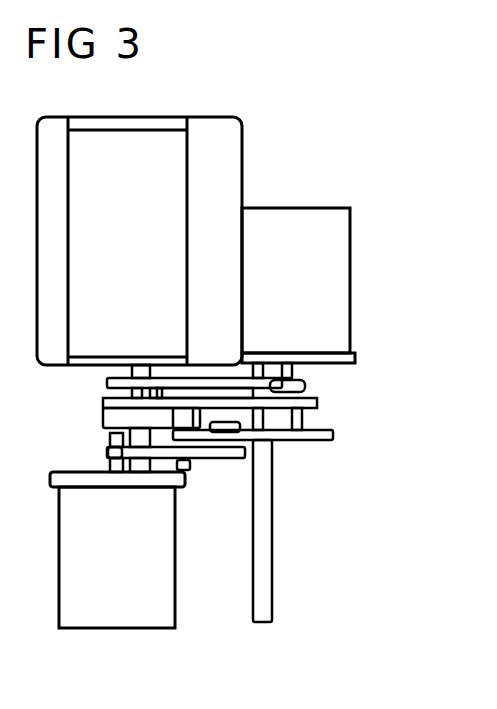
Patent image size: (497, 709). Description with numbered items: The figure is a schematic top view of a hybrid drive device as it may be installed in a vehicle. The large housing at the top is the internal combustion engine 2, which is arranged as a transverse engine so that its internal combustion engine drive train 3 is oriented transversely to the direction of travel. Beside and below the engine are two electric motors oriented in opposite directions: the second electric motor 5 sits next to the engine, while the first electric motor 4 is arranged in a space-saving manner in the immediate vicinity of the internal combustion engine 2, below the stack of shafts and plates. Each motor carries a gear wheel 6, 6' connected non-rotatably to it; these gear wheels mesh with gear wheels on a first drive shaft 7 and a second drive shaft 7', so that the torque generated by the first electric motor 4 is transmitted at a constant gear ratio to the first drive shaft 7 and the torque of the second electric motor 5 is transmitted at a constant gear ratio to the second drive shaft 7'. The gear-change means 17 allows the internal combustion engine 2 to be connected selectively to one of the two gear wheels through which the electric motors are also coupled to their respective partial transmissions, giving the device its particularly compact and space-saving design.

The internal combustion engine 2 is at (233, 130).
The second electric motor 5 is at (305, 218).
The internal combustion engine drive train 3 is at (137, 400).
The gear-change means 17 is at (103, 415).
The gear wheel 6 is at (151, 456).
The gear wheel 6' is at (318, 396).
The first drive shaft 7 is at (241, 487).
The second drive shaft 7' is at (276, 441).
The first electric motor 4 is at (117, 612).